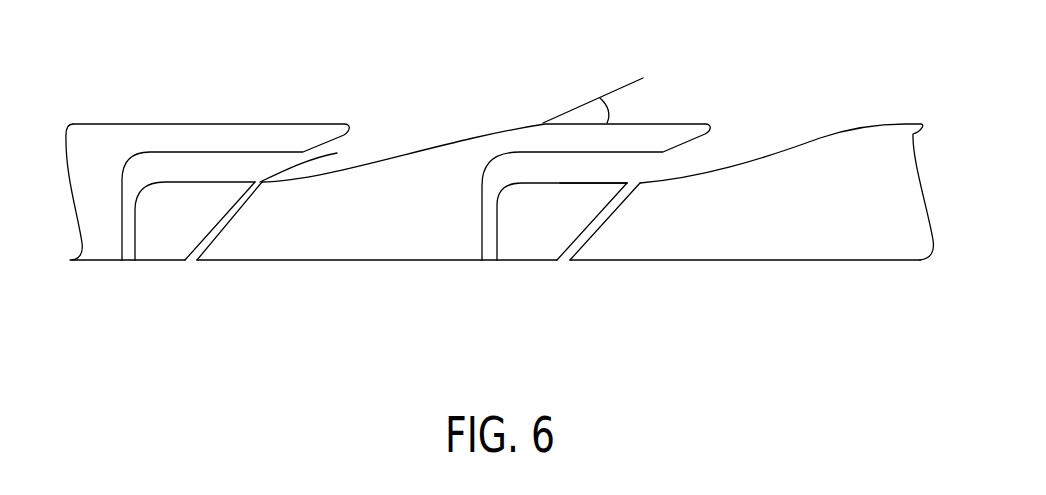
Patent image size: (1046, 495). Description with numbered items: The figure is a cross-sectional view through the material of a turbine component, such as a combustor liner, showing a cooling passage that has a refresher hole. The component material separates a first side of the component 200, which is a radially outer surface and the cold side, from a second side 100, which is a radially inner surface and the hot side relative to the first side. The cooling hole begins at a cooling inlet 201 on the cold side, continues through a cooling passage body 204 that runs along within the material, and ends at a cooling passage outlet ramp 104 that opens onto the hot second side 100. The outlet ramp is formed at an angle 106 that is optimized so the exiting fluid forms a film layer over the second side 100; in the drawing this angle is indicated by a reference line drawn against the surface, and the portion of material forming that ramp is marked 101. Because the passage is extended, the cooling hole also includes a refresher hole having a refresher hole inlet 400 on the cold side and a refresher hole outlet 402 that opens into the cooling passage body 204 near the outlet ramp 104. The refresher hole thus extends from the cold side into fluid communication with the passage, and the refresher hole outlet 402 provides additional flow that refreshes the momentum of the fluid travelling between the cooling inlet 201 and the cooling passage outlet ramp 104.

The second side of the component 100 is at (238, 104).
The engagement member of first member 101 is at (688, 123).
The cooling passage outlet ramp 104 is at (803, 143).
The angle 106 is at (625, 83).
The first side of the component 200 is at (644, 298).
The cooling inlet 201 is at (490, 258).
The cooling passage body 204 is at (602, 178).
The refresher hole inlet 400 is at (190, 263).
The refresher hole outlet 402 is at (313, 161).